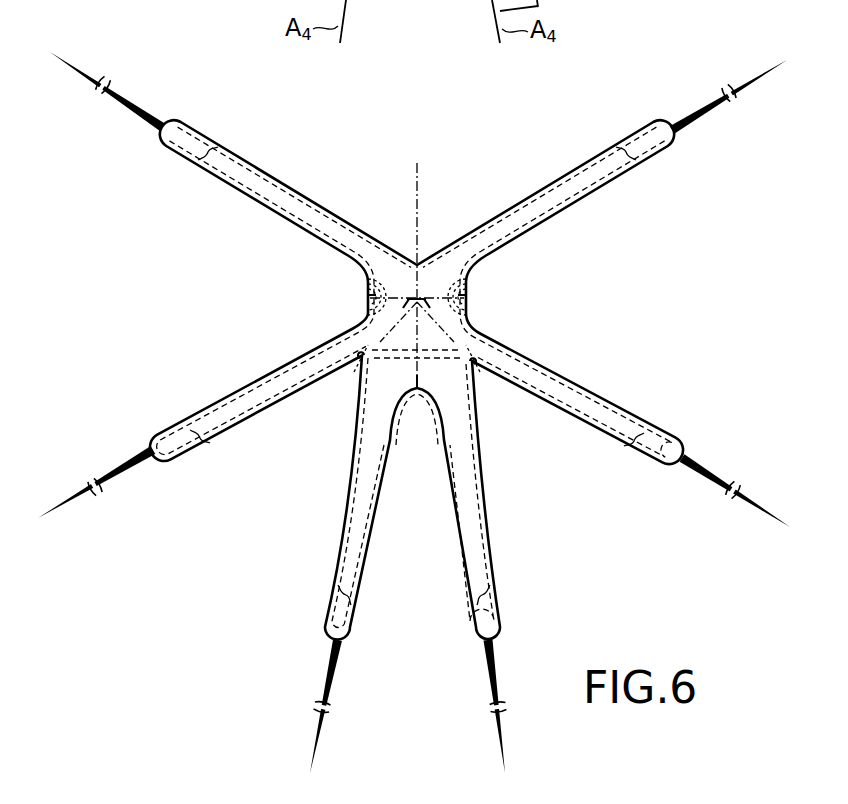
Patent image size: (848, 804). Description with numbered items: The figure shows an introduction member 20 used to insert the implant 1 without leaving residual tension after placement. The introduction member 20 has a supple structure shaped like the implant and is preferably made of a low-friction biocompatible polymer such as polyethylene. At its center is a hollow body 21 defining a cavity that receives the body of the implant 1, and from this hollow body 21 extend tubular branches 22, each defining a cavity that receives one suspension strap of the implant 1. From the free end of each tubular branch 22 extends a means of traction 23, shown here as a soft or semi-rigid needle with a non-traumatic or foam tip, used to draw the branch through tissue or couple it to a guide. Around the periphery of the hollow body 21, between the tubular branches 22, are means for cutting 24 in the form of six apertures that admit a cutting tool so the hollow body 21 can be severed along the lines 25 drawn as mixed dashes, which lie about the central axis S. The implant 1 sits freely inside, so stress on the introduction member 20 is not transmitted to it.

The implant 1 is at (569, 210).
The introduction member 20 is at (605, 297).
The hollow body 21 is at (402, 275).
The tubular branches 22 is at (203, 131).
The means of traction 23 is at (80, 63).
The means for cutting 24 is at (425, 275).
The lines 25 is at (468, 275).
The axis of symmetry S is at (419, 166).